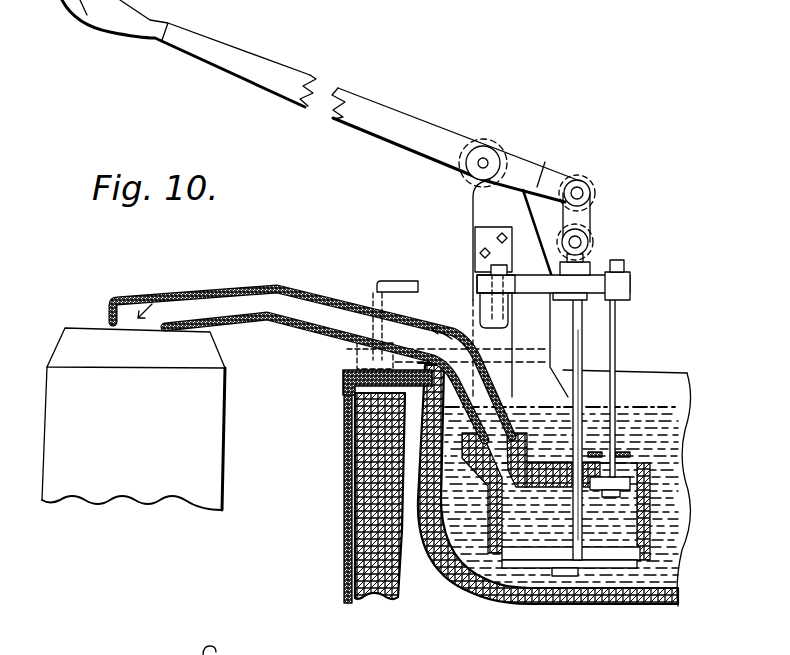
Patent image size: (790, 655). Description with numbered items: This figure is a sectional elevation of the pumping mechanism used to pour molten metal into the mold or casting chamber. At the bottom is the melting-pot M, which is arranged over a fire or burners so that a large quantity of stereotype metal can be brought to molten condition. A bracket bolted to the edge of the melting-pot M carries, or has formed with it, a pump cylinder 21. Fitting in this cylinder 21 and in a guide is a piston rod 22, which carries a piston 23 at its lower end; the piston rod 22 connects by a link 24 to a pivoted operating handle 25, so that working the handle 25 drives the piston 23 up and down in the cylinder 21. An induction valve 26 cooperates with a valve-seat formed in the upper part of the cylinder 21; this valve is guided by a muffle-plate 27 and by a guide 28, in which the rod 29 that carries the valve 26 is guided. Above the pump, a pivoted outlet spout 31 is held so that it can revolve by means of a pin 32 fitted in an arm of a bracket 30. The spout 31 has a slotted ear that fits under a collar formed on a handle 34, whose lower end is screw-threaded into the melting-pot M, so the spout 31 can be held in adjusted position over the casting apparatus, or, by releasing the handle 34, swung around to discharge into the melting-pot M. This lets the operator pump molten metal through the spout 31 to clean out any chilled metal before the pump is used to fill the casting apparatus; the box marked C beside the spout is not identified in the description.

The pump cylinder 21 is at (650, 537).
The piston rod 22 is at (573, 335).
The piston 23 is at (623, 557).
The link 24 is at (580, 217).
The operating handle 25 is at (275, 77).
The induction valve 26 is at (650, 477).
The muffle-plate 27 is at (628, 450).
The guide 28 is at (630, 292).
The rod 29 is at (617, 385).
The bracket 30 is at (480, 235).
The outlet spout 31 is at (312, 312).
The pin 32 is at (487, 268).
The handle 34 is at (392, 281).
The mold box C is at (133, 419).
The melting-pot M is at (706, 650).